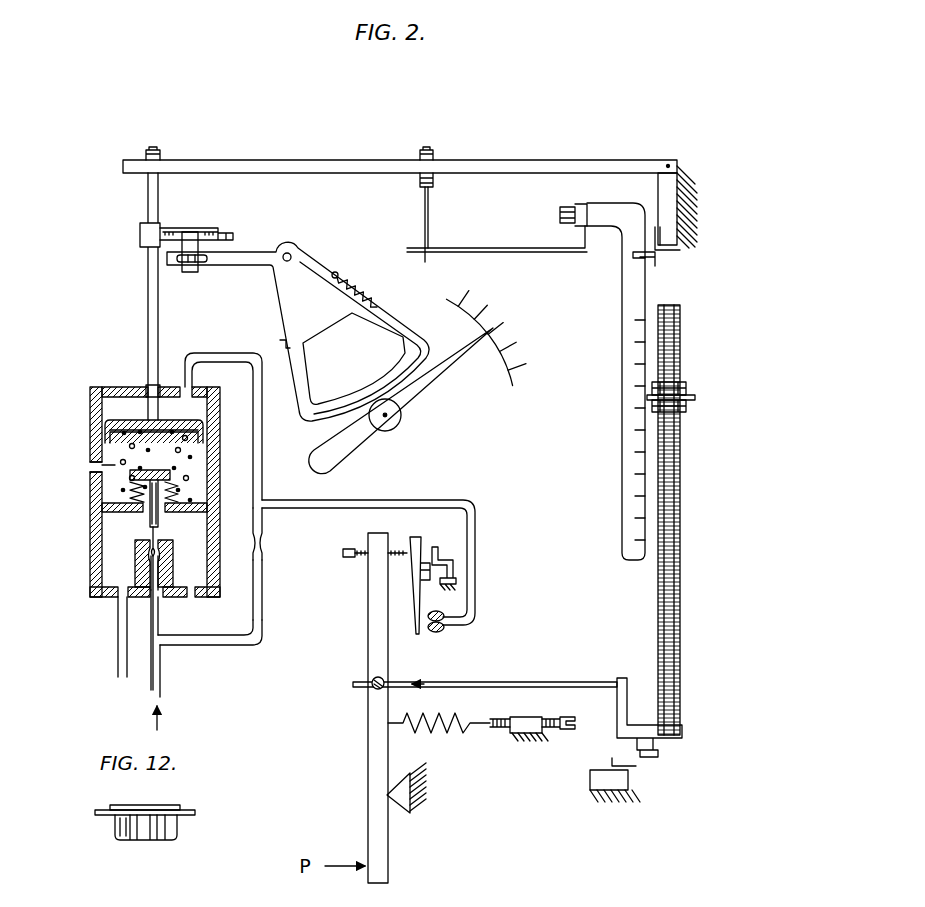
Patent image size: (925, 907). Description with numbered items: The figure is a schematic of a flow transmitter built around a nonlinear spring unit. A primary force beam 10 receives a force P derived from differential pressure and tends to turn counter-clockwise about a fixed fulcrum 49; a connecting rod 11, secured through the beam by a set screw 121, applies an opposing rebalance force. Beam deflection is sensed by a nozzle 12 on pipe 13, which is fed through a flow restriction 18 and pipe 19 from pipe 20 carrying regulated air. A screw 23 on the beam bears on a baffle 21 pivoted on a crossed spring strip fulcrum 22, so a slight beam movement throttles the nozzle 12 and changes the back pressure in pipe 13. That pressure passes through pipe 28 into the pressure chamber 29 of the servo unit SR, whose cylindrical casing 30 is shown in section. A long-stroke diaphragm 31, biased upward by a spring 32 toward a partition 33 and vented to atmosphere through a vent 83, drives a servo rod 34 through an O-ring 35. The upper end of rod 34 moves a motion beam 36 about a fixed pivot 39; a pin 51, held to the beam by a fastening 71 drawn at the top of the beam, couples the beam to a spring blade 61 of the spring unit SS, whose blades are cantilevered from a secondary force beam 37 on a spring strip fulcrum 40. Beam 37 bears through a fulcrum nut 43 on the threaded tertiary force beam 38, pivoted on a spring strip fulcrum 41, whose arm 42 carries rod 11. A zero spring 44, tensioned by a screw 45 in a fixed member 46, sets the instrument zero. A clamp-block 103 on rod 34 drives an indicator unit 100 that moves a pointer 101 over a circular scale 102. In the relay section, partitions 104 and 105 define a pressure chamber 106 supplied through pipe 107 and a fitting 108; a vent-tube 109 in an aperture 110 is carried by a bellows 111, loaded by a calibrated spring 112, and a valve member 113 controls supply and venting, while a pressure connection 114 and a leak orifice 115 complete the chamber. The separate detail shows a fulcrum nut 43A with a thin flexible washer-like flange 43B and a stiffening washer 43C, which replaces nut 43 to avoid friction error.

In FIG. 2, the primary force beam 10 is at (375, 770).
In FIG. 2, the connecting rod 11 is at (495, 681).
In FIG. 2, the nozzle 12 is at (438, 612).
In FIG. 2, the pipe 13 is at (472, 523).
In FIG. 2, the flow restriction 18 is at (263, 543).
In FIG. 2, the pipe 19 is at (262, 572).
In FIG. 2, the pipe 20 is at (151, 690).
In FIG. 2, the baffle 21 is at (418, 588).
In FIG. 2, the crossed spring strip fulcrum 22 is at (432, 545).
In FIG. 2, the screw 23 is at (362, 552).
In FIG. 2, the pipe 28 is at (218, 353).
In FIG. 2, the pressure chamber 29 is at (122, 405).
In FIG. 2, the cylindrical casing 30 is at (100, 598).
In FIG. 2, the long-stroke diaphragm 31 is at (100, 448).
In FIG. 2, the spring 32 is at (123, 481).
In FIG. 2, the partition 33 is at (138, 385).
In FIG. 2, the servo rod 34 is at (150, 305).
In FIG. 2, the O-ring 35 is at (160, 385).
In FIG. 2, the motion beam 36 is at (328, 166).
In FIG. 2, the secondary force beam 37 is at (632, 306).
In FIG. 2, the tertiary force beam 38 is at (680, 548).
In FIG. 2, the pivot 39 is at (672, 165).
In FIG. 2, the spring strip fulcrum 40 is at (660, 258).
In FIG. 2, the spring strip fulcrum 41 is at (622, 772).
In FIG. 2, the arm 42 is at (625, 710).
In FIG. 2, the fulcrum nut 43 is at (690, 396).
In FIG. 12, the fulcrum nut 43A is at (113, 835).
In FIG. 12, the washer-like flange 43B is at (178, 816).
In FIG. 12, the stiffening washer 43C is at (158, 805).
In FIG. 2, the zero spring 44 is at (445, 730).
In FIG. 2, the screw 45 is at (558, 726).
In FIG. 2, the fixed member 46 is at (525, 722).
In FIG. 2, the fulcrum 49 is at (395, 806).
In FIG. 2, the pin 51 is at (425, 224).
In FIG. 2, the spring blade 61 is at (430, 255).
In FIG. 2, the nut 71 is at (430, 150).
In FIG. 2, the vent 83 is at (96, 467).
In FIG. 2, the indicator unit 100 is at (327, 371).
In FIG. 2, the pointer 101 is at (440, 378).
In FIG. 2, the circular scale 102 is at (500, 345).
In FIG. 2, the clamp-block 103 is at (140, 238).
In FIG. 2, the partition 104 is at (195, 508).
In FIG. 2, the partition 105 is at (180, 581).
In FIG. 2, the pressure chamber 106 is at (125, 531).
In FIG. 2, the pipe 107 is at (162, 615).
In FIG. 2, the fitting 108 is at (133, 567).
In FIG. 2, the vent-tube 109 is at (185, 498).
In FIG. 2, the aperture 110 is at (125, 499).
In FIG. 2, the bellows 111 is at (183, 456).
In FIG. 2, the calibrated spring 112 is at (96, 453).
In FIG. 2, the valve member 113 is at (125, 541).
In FIG. 2, the pressure connection 114 is at (128, 668).
In FIG. 2, the orifice 115 is at (188, 600).
In FIG. 2, the set screw 121 is at (372, 680).
In FIG. 2, the servo unit SR is at (123, 366).
In FIG. 2, the spring unit SS is at (492, 243).